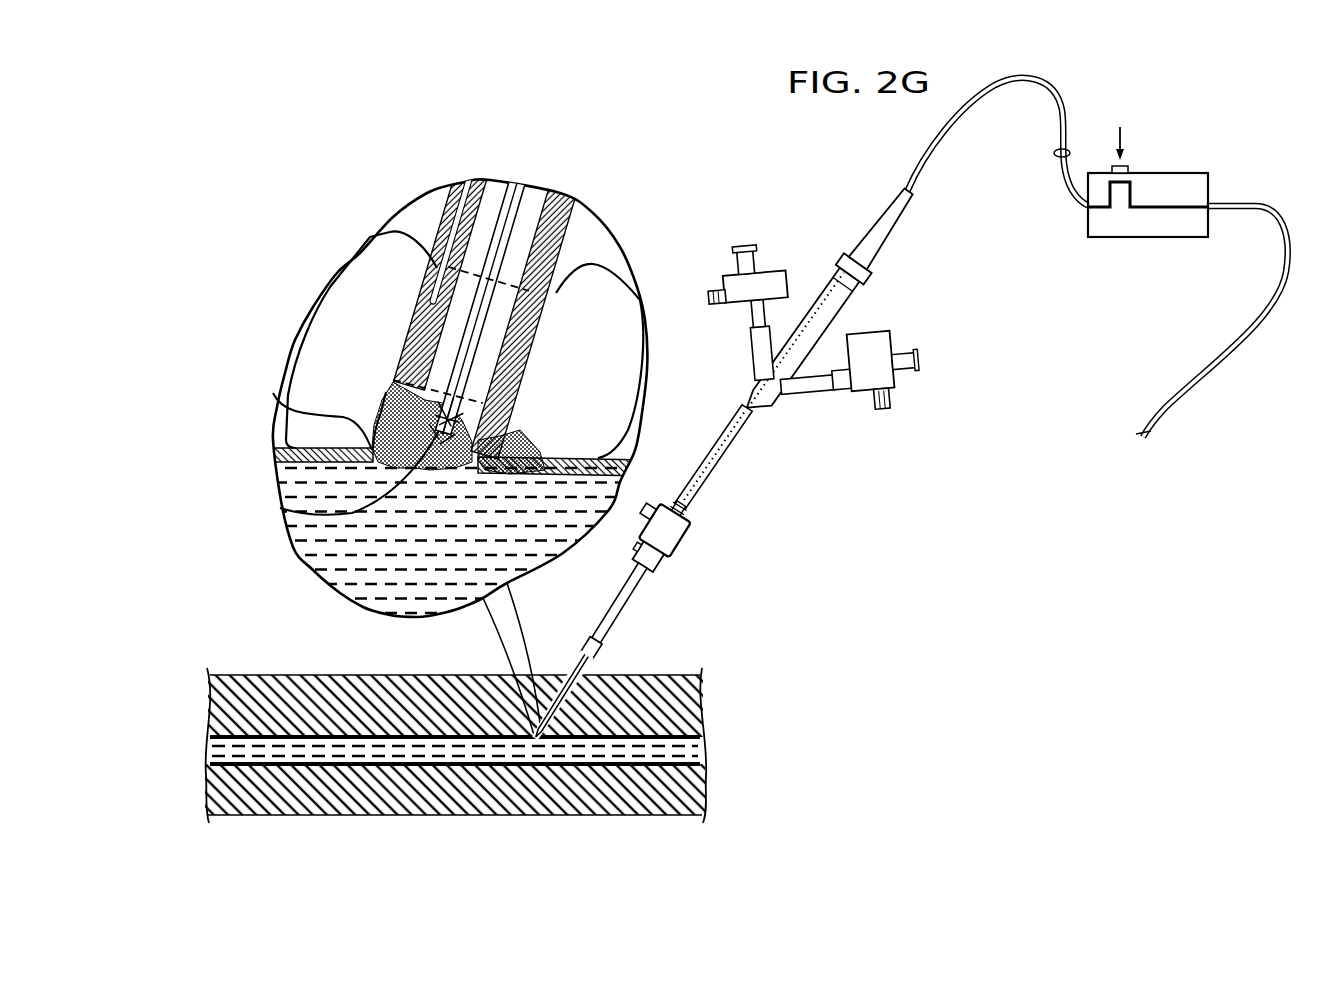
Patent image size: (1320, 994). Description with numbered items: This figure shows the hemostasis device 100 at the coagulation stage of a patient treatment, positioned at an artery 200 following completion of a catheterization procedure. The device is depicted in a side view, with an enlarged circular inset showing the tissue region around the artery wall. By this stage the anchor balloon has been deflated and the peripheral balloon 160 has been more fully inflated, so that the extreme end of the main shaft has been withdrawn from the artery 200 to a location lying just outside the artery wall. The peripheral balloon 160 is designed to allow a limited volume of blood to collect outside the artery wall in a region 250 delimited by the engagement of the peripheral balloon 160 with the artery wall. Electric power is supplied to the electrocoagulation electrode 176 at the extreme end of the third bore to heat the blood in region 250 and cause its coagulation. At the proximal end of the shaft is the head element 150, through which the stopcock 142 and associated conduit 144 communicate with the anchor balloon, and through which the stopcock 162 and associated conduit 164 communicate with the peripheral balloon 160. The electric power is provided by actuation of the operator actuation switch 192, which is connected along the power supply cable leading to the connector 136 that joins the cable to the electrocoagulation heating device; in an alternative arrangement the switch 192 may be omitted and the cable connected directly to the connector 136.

The hemostasis device 100 is at (749, 486).
The connector 136 is at (920, 262).
The stopcock 142 is at (709, 293).
The conduit 144 is at (750, 349).
The head element 150 is at (833, 326).
The peripheral balloon 160 is at (330, 317).
The stopcock 162 is at (876, 408).
The conduit 164 is at (810, 387).
The electrocoagulation electrode 176 is at (280, 508).
The operator actuation switch 192 is at (1172, 181).
The artery 200 is at (190, 712).
The region 250 is at (273, 393).